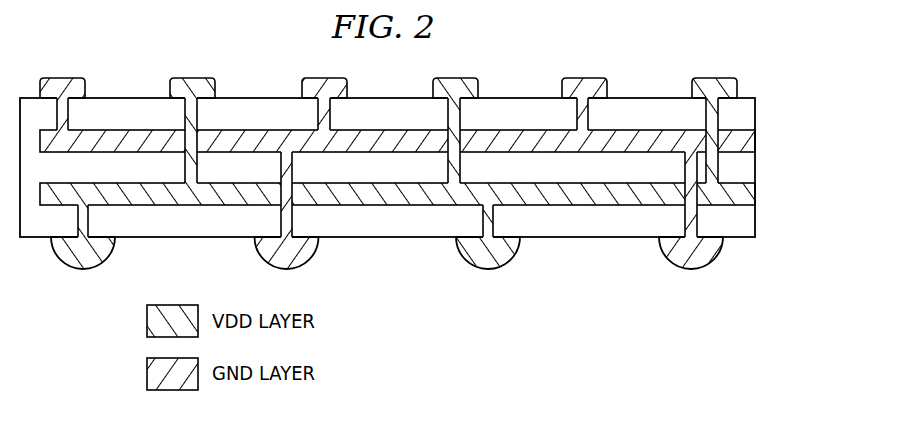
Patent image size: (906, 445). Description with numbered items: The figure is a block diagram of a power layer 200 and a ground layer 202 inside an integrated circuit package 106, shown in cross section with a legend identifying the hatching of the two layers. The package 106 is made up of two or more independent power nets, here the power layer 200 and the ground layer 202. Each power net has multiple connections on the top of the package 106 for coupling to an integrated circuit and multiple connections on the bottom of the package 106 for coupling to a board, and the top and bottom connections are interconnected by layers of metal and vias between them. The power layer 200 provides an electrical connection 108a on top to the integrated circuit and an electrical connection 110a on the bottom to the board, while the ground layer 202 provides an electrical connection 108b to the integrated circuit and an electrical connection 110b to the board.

The package 106 is at (130, 98).
The electrical connection 108a is at (192, 78).
The electrical connection 108b is at (598, 78).
The electrical connection 110a is at (488, 270).
The electrical connection 110b is at (690, 270).
The power layer 200 is at (755, 197).
The ground layer 202 is at (757, 118).